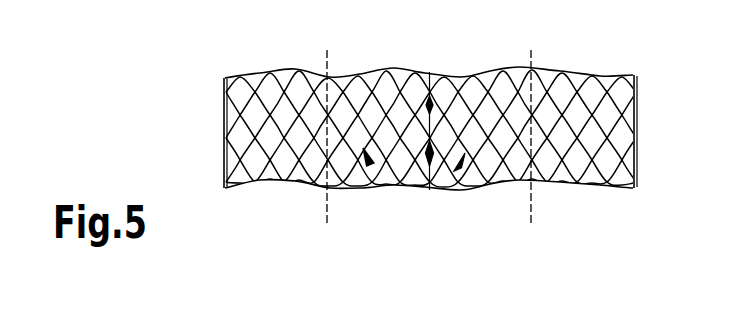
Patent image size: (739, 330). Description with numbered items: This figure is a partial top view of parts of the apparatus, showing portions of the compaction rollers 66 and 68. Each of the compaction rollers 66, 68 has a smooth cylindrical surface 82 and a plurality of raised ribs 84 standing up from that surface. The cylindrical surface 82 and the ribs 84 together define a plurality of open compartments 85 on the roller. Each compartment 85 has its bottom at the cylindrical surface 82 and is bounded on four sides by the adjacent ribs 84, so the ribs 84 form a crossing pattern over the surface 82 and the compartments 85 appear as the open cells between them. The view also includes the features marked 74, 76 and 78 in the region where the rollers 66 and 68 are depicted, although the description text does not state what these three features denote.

The compaction roller 66 is at (214, 133).
The compaction roller 68 is at (648, 110).
The first reference plane 74 is at (327, 202).
The second reference plane 76 is at (532, 196).
The junction / interlocking region 78 is at (447, 93).
The smooth cylindrical surface 82 is at (280, 77).
The raised ribs 84 is at (400, 75).
The open compartments 85 is at (458, 169).